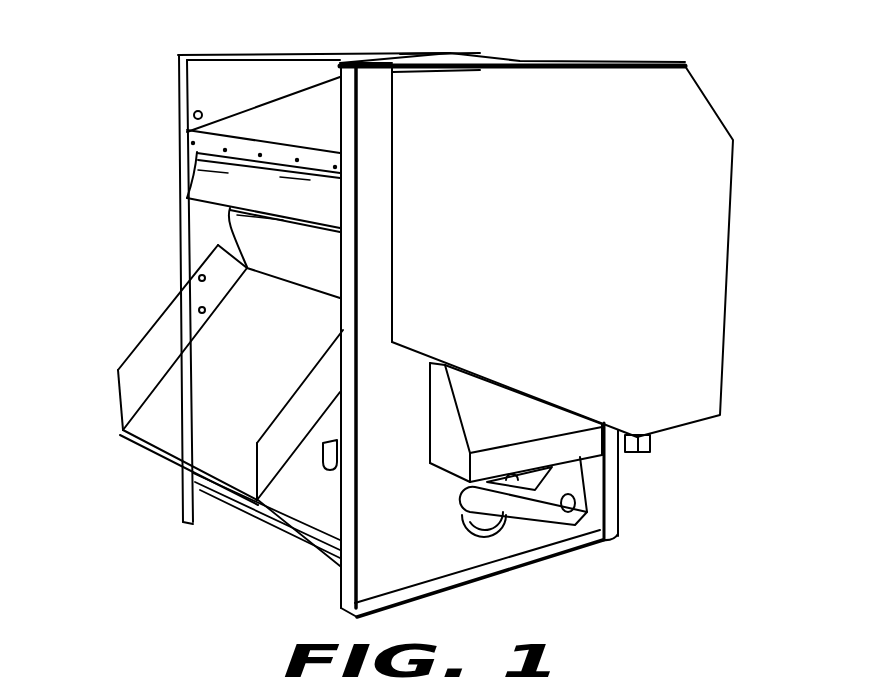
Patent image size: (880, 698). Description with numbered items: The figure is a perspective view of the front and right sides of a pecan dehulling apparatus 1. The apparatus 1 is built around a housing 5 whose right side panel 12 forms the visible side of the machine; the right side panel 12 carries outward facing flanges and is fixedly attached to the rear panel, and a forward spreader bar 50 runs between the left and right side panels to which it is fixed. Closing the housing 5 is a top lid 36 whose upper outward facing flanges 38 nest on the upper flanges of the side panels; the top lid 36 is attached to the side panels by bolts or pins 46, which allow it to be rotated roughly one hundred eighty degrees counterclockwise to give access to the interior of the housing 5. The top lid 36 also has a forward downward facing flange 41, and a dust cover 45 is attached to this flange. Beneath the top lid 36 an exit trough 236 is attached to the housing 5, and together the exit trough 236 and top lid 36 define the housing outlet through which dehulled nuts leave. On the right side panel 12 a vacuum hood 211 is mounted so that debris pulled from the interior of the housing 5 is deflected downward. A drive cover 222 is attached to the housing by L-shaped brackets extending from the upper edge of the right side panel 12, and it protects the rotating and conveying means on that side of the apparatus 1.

The pecan dehulling apparatus 1 is at (398, 42).
The housing 5 is at (434, 48).
The right side panel 12 is at (372, 560).
The top lid 36 is at (313, 113).
The upper outward facing flanges 38 is at (246, 55).
The forward downward facing flange 41 is at (190, 143).
The dust cover 45 is at (205, 192).
The bolts or pins 46 is at (194, 114).
The forward spreader bar 50 is at (273, 528).
The vacuum hood 211 is at (455, 462).
The drive cover 222 is at (728, 265).
The exit trough 236 is at (118, 403).